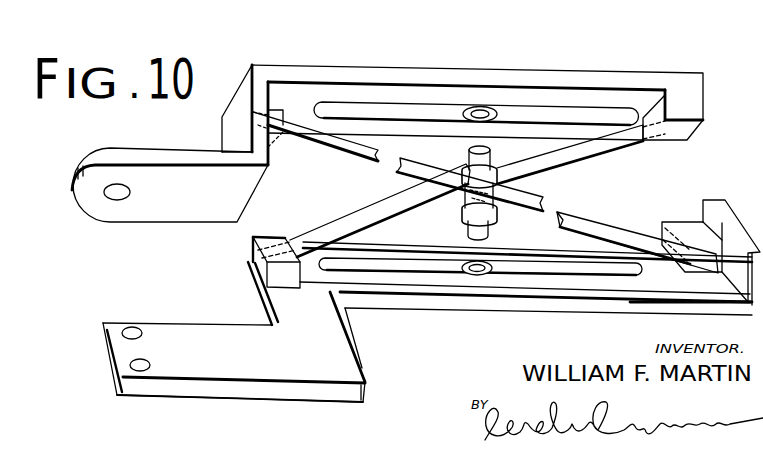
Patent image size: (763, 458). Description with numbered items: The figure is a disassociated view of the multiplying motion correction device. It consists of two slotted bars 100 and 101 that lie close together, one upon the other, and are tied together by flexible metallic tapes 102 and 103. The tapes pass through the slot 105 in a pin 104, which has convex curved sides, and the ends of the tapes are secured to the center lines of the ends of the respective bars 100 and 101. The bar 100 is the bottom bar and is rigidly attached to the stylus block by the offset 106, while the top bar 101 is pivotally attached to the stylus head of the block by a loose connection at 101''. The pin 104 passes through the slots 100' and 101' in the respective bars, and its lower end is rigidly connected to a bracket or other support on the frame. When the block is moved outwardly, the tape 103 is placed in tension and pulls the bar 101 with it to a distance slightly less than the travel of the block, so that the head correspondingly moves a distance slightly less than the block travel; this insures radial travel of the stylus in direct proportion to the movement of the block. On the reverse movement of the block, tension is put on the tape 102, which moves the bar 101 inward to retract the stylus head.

The slotted bar 100 is at (504, 291).
The slot 100' is at (480, 300).
The slotted bar 101 is at (387, 123).
The slot 101' is at (476, 74).
The loose connection 101'' is at (126, 226).
The flexible metallic tape 102 is at (608, 230).
The flexible metallic tape 103 is at (603, 153).
The pin 104 is at (407, 170).
The slot 105 is at (498, 193).
The offset 106 is at (227, 365).